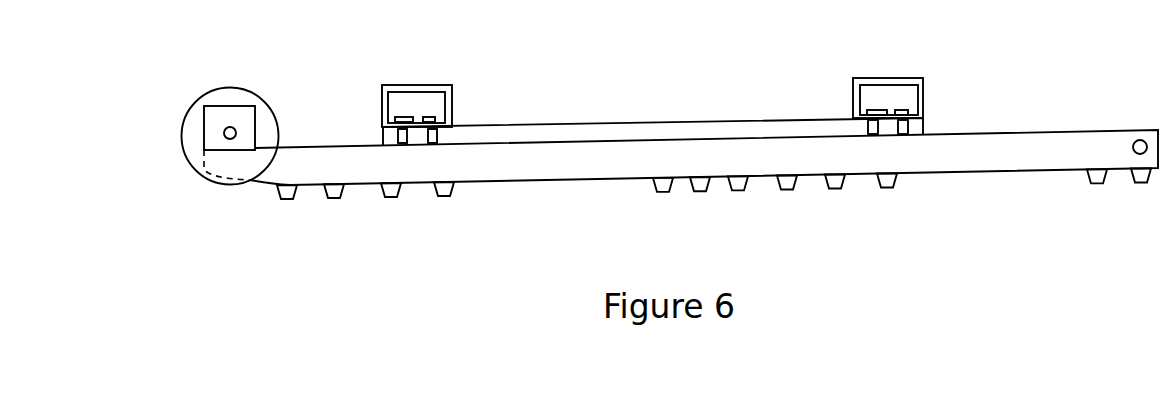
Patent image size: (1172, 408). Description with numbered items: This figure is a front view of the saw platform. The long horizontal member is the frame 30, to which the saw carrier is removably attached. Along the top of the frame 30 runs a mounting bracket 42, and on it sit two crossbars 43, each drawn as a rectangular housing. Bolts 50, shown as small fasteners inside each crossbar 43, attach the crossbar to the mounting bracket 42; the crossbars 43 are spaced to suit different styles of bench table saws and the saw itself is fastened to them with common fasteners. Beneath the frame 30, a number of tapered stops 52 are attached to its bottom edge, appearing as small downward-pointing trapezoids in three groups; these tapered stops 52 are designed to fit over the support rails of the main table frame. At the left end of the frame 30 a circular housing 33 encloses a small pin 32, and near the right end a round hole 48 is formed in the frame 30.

The frame 30 is at (962, 182).
The pivot pin 32 is at (226, 129).
The pivot housing 33 is at (243, 88).
The mounting bracket 42 is at (718, 110).
The crossbar 43 is at (462, 95).
The mounting hole 48 is at (1138, 138).
The bolt 50 is at (427, 115).
The tapered stop 52 is at (293, 208).